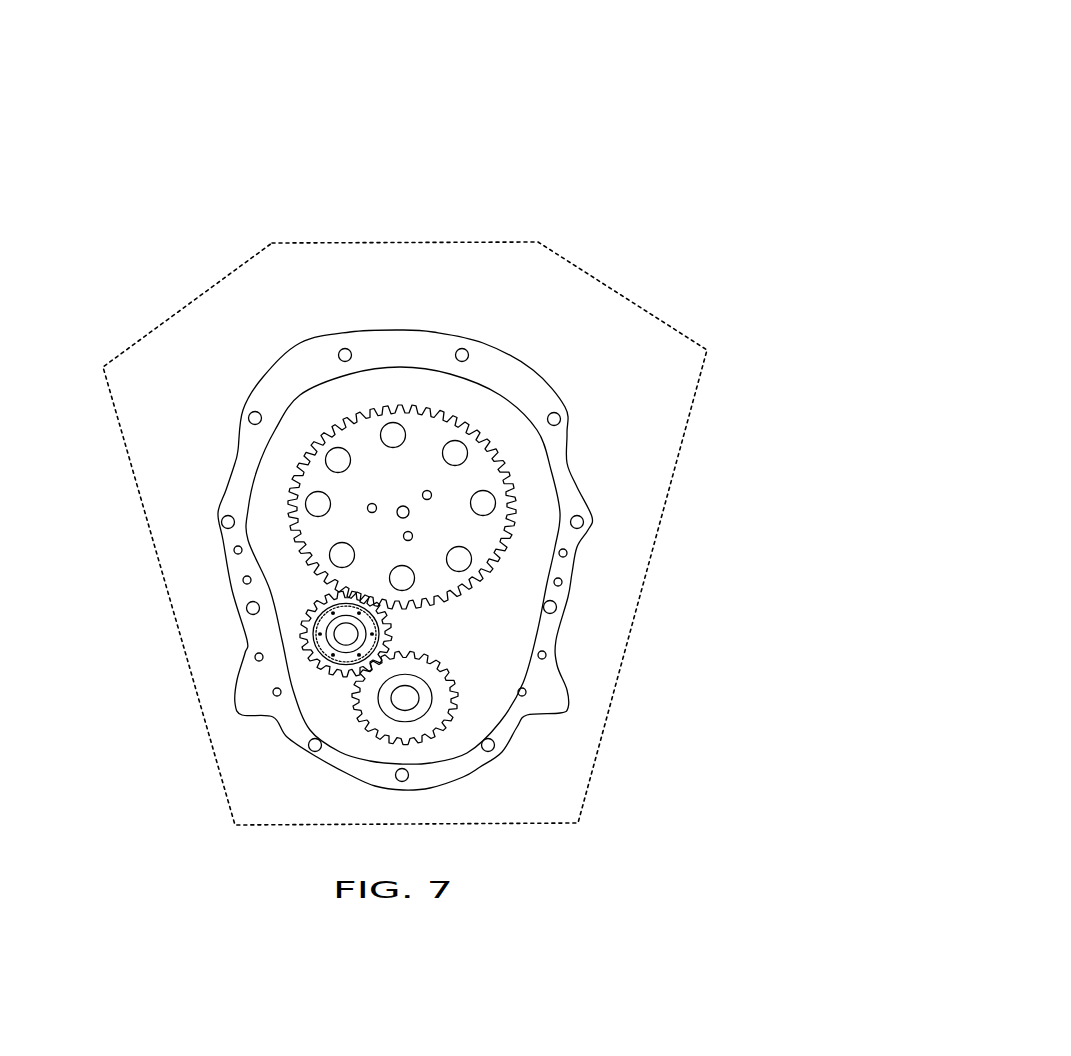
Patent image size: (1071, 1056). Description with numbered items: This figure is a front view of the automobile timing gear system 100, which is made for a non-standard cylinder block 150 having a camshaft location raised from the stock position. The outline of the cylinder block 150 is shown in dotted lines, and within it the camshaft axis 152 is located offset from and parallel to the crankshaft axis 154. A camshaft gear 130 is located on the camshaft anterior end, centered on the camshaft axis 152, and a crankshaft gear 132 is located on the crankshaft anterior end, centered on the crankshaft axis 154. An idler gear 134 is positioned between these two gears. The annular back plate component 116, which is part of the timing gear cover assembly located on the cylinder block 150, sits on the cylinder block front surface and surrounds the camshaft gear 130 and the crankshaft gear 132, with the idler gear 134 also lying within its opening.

The automobile timing gear system 100 is at (586, 142).
The annular back plate component 116 is at (541, 327).
The camshaft gear 130 is at (427, 400).
The crankshaft gear 132 is at (418, 734).
The idler gear 134 is at (272, 621).
The non-standard cylinder block 150 is at (673, 473).
The camshaft axis 152 is at (409, 513).
The crankshaft axis 154 is at (405, 698).